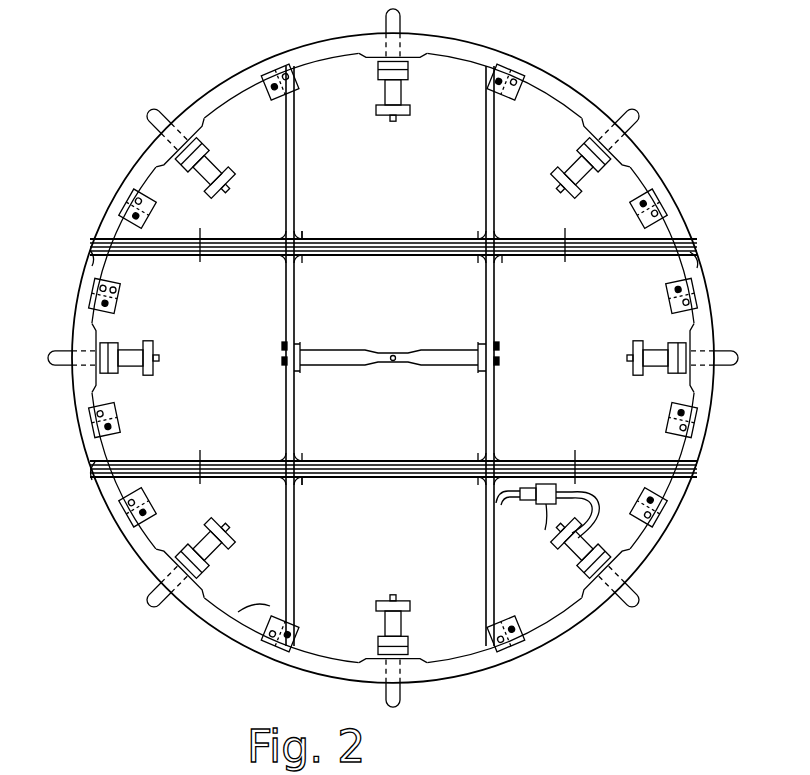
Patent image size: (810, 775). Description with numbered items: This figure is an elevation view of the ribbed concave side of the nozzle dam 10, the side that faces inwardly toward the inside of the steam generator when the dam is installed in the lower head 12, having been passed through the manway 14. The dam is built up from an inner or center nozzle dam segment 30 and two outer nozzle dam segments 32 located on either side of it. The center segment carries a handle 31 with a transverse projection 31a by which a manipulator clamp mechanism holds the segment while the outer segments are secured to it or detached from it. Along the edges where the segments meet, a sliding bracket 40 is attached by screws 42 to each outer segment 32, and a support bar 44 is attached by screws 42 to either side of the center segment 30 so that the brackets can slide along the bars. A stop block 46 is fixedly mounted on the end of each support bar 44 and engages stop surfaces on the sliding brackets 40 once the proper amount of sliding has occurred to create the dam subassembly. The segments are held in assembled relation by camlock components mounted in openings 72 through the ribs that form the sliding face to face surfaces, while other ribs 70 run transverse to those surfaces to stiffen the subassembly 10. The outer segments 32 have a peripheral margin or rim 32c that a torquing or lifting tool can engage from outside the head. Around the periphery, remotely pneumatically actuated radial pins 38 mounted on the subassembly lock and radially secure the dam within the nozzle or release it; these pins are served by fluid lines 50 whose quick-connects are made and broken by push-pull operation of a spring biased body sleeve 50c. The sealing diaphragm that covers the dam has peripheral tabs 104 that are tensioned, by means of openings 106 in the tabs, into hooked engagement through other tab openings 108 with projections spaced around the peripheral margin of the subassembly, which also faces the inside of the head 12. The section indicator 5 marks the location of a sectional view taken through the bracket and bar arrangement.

The nozzle dam 10 is at (157, 88).
The lower head 12 is at (197, 285).
The manway 14 is at (435, 725).
The section line 5- 5 is at (435, 281).
The inner nozzle dam segment 30 is at (582, 309).
The handle 31 is at (443, 367).
The transverse projection 31a is at (395, 355).
The outer nozzle dam segment 32 is at (343, 164).
The peripheral rim 32c is at (238, 612).
The radial pin 38 is at (633, 118).
The sliding bracket 40 is at (363, 238).
The screw 42 is at (536, 240).
The support bar 44 is at (322, 258).
The stop block 46 is at (690, 252).
The fluid line 50 is at (600, 506).
The spring biased body sleeve 50c is at (545, 530).
The transverse stiffening rib 70 is at (494, 162).
The opening 72 is at (200, 247).
The peripheral tab 104 is at (92, 296).
The opening 106 is at (113, 290).
The tab opening 108 is at (88, 250).